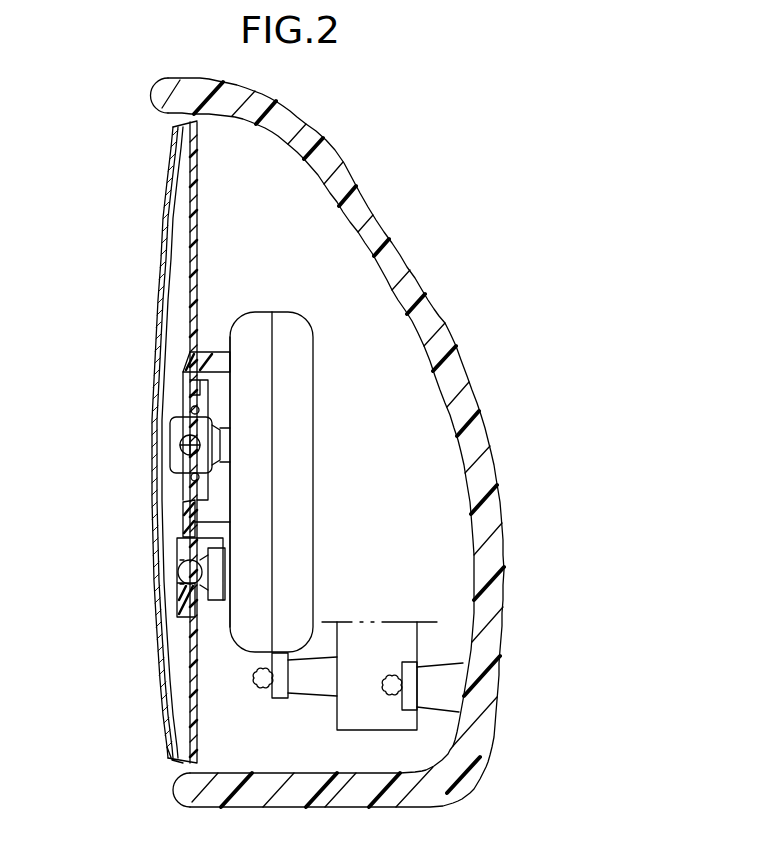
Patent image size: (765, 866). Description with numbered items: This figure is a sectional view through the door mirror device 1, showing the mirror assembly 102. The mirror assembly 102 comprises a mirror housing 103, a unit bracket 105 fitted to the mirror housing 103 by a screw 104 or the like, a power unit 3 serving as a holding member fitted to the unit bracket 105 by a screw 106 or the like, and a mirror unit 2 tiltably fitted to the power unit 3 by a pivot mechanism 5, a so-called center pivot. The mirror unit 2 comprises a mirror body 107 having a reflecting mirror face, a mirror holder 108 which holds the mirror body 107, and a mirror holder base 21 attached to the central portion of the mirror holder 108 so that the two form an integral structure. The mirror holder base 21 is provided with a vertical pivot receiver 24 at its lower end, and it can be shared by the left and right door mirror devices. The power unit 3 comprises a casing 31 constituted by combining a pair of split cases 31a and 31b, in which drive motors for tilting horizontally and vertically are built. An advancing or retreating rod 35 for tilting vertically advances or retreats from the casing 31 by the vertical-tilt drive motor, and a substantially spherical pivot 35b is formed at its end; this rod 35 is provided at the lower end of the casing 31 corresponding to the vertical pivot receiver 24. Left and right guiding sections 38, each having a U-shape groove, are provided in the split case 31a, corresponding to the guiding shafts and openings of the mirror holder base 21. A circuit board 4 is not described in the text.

The door mirror device 1 is at (100, 133).
The mirror unit 2 is at (150, 179).
The power unit 3 is at (308, 444).
The circuit board 4 is at (183, 487).
The pivot mechanism 5 is at (176, 432).
The mirror holder base 21 is at (196, 332).
The vertical pivot receiver 24 is at (180, 562).
The casing 31 is at (272, 444).
The split case 31a is at (256, 332).
The split case 31b is at (293, 459).
The advancing or retreating rod for tilting vertically 35 is at (217, 594).
The substantially spherical pivot 35b is at (184, 580).
The guiding section 38 is at (185, 358).
The mirror assembly 102 is at (348, 143).
The mirror housing 103 is at (373, 195).
The screw 104 is at (387, 676).
The unit bracket 105 is at (337, 718).
The screw 106 is at (263, 690).
The mirror body 107 is at (163, 262).
The mirror holder 108 is at (199, 183).